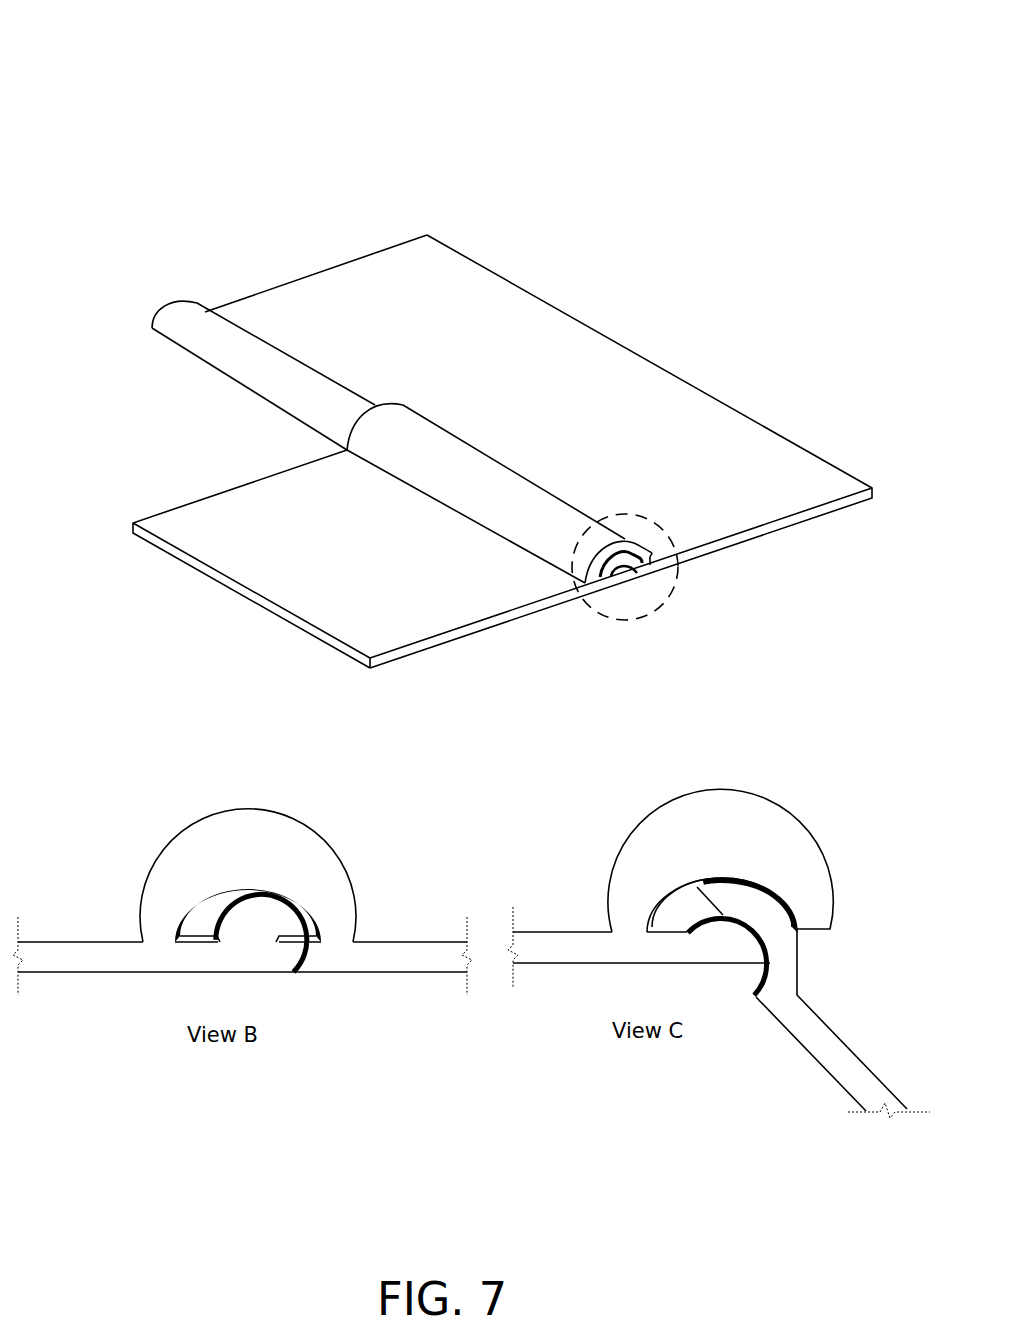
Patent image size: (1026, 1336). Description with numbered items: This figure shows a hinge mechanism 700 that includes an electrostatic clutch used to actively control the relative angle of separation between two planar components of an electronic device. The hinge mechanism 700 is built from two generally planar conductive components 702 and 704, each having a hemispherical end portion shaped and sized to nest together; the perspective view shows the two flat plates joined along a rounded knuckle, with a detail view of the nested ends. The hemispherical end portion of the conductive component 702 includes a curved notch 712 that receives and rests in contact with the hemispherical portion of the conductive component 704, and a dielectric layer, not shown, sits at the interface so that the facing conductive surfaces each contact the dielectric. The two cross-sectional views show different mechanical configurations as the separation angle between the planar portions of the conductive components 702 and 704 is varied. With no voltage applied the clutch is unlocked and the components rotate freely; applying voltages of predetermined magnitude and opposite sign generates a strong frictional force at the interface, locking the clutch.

The hinge mechanism 700 is at (130, 52).
The conductive component 702 is at (520, 320).
The conductive component 704 is at (277, 498).
The curved notch 712 is at (670, 915).